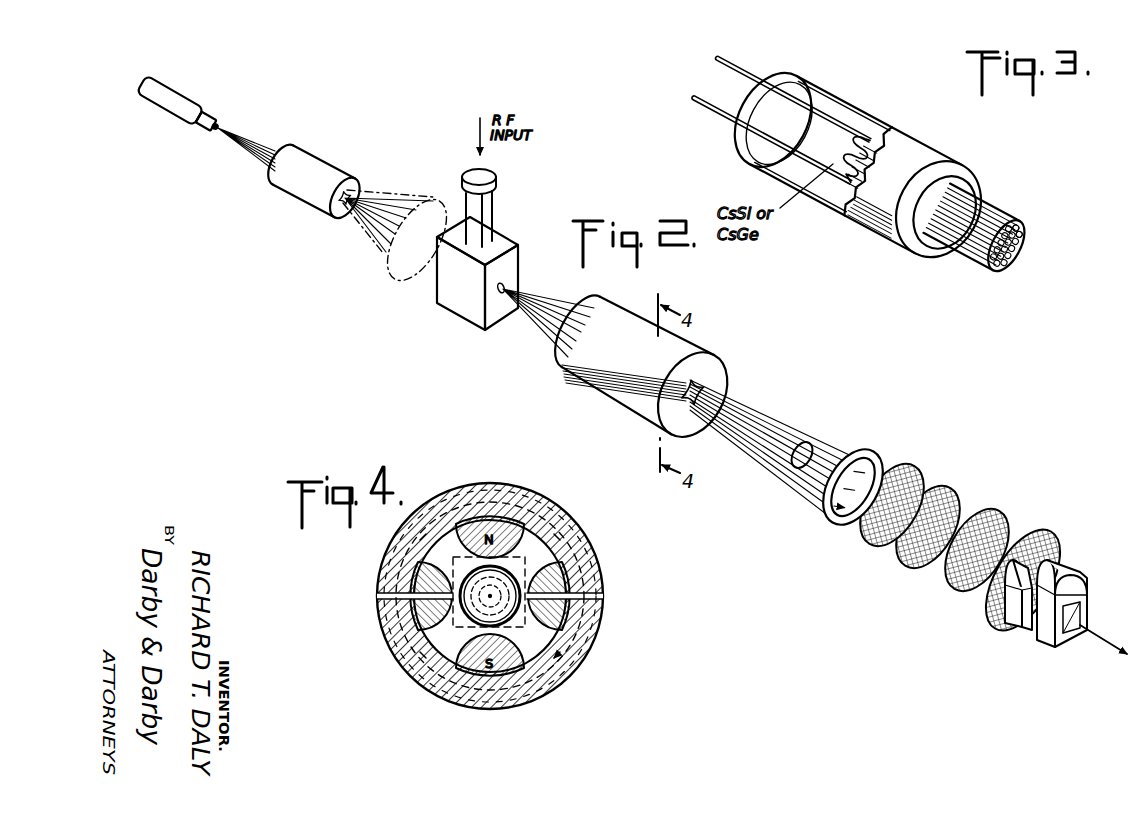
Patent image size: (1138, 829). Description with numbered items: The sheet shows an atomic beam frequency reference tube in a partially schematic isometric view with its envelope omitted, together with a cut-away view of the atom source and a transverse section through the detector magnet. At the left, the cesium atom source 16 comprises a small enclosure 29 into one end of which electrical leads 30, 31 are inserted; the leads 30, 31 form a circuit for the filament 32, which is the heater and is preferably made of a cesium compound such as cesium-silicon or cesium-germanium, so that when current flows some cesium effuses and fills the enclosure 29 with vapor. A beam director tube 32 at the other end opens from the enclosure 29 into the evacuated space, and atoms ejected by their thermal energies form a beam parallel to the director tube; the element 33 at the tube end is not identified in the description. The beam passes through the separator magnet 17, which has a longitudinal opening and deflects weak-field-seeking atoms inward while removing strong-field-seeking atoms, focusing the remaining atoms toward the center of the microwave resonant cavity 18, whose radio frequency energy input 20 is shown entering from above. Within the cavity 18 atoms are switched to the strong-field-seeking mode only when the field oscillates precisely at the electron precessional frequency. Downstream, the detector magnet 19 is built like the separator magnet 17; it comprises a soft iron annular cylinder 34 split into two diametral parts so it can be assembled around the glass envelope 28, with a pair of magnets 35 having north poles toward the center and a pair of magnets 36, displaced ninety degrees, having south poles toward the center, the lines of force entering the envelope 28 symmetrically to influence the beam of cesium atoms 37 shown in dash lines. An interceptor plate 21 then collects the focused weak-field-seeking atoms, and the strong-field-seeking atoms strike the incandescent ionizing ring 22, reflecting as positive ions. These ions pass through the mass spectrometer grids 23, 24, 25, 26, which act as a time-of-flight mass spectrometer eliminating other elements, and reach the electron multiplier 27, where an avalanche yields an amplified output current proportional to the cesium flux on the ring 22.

In FIG. 2, the cesium atom source 16 is at (184, 96).
In FIG. 3, the cesium atom source 16 is at (934, 140).
In FIG. 2, the separator magnet 17 is at (330, 173).
In FIG. 2, the microwave resonant cavity 18 is at (508, 238).
In FIG. 2, the detector magnet 19 is at (703, 357).
In FIG. 4, the detector magnet 19 is at (505, 472).
In FIG. 2, the radio frequency energy input 20 is at (494, 215).
In FIG. 2, the interceptor plate 21 is at (808, 445).
In FIG. 2, the ionizing ring 22 is at (877, 452).
In FIG. 2, the mass spectrometer grid 23 is at (917, 470).
In FIG. 2, the mass spectrometer grid 24 is at (953, 488).
In FIG. 2, the mass spectrometer grid 25 is at (1000, 510).
In FIG. 2, the mass spectrometer grid 26 is at (1052, 533).
In FIG. 2, the electron multiplier 27 is at (1047, 551).
In FIG. 4, the envelope 28 is at (528, 566).
In FIG. 3, the enclosure 29 is at (823, 90).
In FIG. 3, the electrical lead 30 is at (712, 107).
In FIG. 3, the electrical lead 31 is at (737, 66).
In FIG. 3, the filament 32 is at (842, 152).
In FIG. 3, the fibers 33 is at (1017, 251).
In FIG. 4, the annular cylinder 34 is at (594, 571).
In FIG. 4, the magnets 35 is at (485, 522).
In FIG. 4, the magnets 36 is at (603, 598).
In FIG. 4, the beam of cesium atoms 37 is at (440, 648).